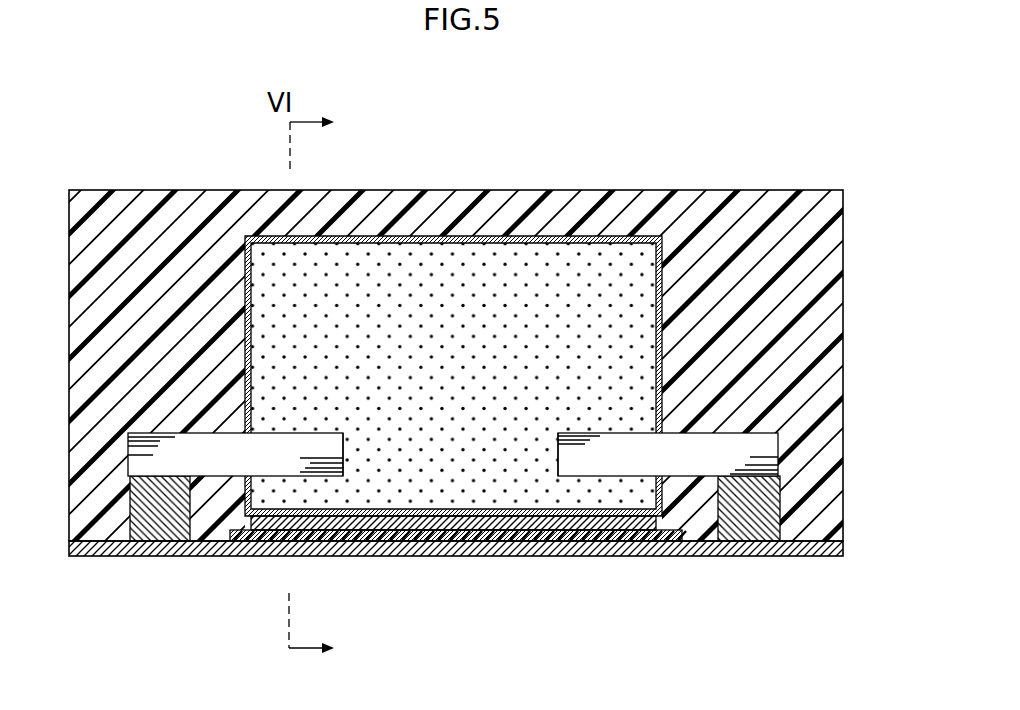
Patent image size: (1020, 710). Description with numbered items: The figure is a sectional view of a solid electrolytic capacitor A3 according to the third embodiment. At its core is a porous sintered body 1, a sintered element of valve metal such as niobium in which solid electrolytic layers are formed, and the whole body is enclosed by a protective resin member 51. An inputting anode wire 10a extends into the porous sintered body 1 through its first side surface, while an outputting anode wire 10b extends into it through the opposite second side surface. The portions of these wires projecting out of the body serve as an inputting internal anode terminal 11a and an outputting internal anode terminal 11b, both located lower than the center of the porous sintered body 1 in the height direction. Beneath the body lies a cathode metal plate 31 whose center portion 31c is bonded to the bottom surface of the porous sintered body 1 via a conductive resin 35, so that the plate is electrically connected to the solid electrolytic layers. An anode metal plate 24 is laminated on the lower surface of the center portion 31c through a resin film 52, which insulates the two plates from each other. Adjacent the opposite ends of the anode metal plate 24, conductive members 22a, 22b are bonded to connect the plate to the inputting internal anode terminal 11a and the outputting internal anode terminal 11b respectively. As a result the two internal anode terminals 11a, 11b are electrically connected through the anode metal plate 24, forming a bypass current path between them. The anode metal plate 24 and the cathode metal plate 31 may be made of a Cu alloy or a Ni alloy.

The porous sintered body 1 is at (448, 257).
The conductive resin 35 is at (368, 240).
The protective resin member 51 is at (572, 217).
The solid electrolytic capacitor A3 is at (850, 152).
The inputting internal anode terminal 11a is at (153, 448).
The outputting internal anode terminal 11b is at (755, 450).
The inputting anode wire 10a is at (330, 442).
The outputting anode wire 10b is at (573, 440).
The conductive member 22a is at (137, 500).
The conductive member 22b is at (780, 502).
The cathode metal plate 31 is at (429, 522).
The center portion 31c is at (366, 534).
The resin film 52 is at (487, 536).
The anode metal plate 24 is at (543, 549).